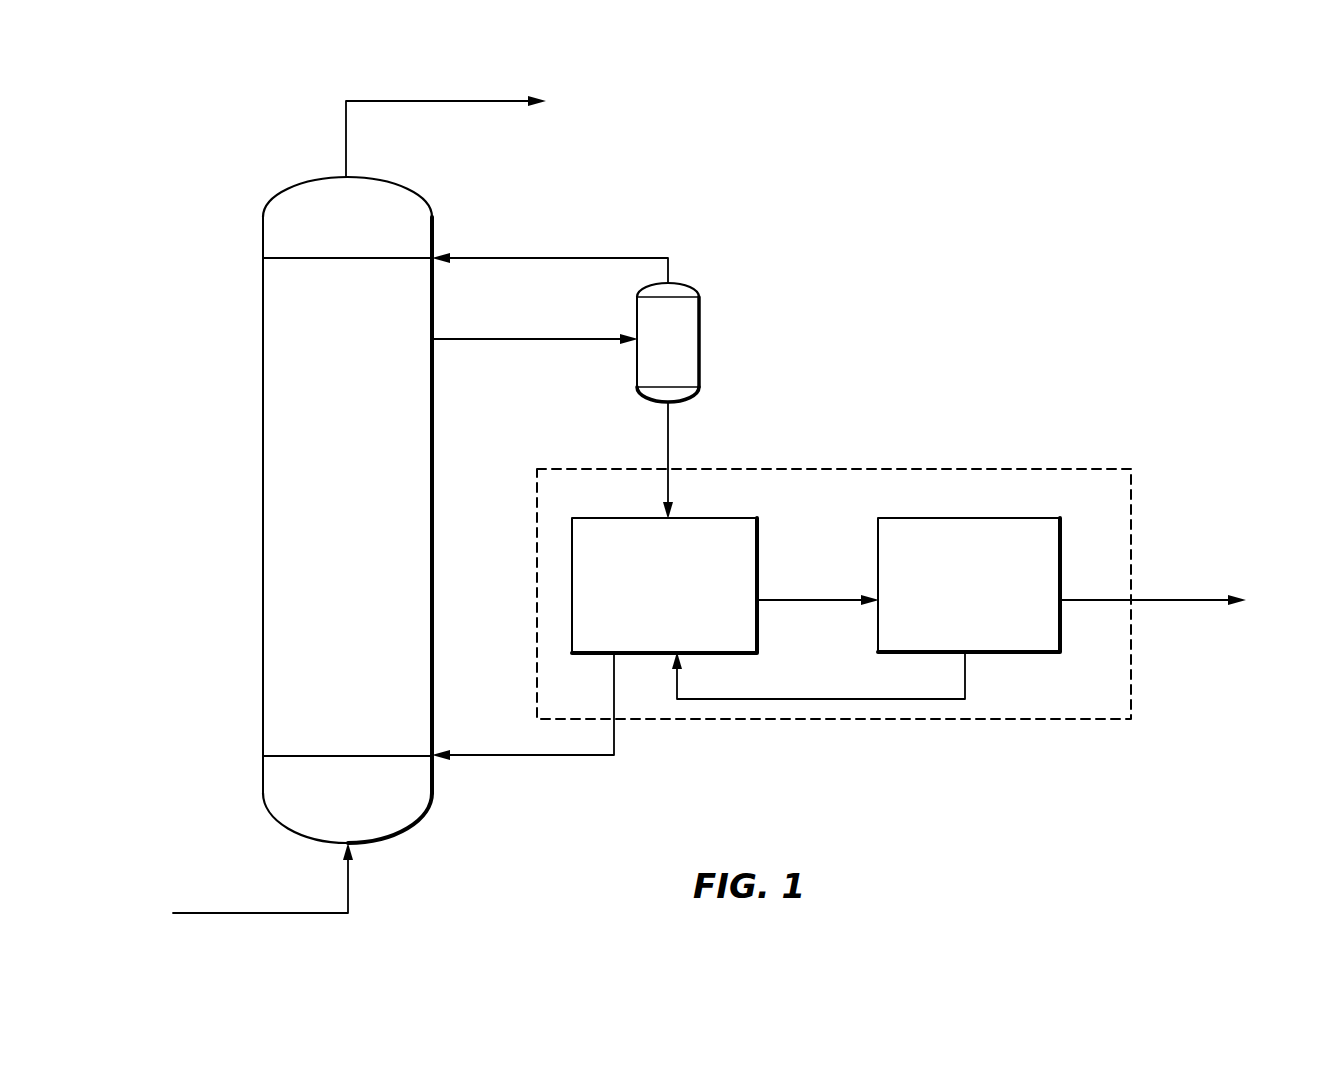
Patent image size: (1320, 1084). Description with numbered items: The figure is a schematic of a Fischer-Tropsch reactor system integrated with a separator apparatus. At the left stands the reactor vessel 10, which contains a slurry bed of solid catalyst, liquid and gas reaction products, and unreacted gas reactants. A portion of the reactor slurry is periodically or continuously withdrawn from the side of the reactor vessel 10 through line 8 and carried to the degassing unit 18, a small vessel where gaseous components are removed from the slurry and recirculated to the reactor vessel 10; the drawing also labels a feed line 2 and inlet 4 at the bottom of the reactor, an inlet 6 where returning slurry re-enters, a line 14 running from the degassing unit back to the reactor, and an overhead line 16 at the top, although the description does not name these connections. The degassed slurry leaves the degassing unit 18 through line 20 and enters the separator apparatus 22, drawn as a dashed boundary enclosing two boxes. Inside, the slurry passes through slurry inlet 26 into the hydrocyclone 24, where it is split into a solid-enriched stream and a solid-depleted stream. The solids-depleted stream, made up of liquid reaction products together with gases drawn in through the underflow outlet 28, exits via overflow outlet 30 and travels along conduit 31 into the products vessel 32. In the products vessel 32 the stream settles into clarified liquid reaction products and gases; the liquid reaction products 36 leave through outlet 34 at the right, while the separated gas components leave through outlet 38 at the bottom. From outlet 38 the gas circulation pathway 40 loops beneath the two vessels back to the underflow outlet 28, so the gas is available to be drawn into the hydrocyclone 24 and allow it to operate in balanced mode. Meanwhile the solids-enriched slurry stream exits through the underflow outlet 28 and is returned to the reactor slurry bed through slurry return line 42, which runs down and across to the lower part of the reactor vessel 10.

The feed line 2 is at (232, 912).
The column inlet 4 is at (357, 845).
The recycle inlet 6 is at (434, 748).
The line 8 is at (434, 341).
The reactor vessel 10 is at (361, 522).
The return line 14 is at (470, 258).
The overhead line 16 is at (346, 141).
The degassing unit 18 is at (683, 353).
The line 20 is at (667, 420).
The separator apparatus 22 is at (1052, 469).
The hydrocyclone 24 is at (679, 595).
The slurry inlet 26 is at (662, 517).
The underflow outlet 28 is at (672, 655).
The overflow outlet 30 is at (759, 603).
The conduit 31 is at (795, 599).
The products vessel 32 is at (982, 595).
The outlet 34 is at (1062, 603).
The liquid reaction products 36 is at (1281, 614).
The outlet 38 is at (966, 655).
The gas circulation pathway 40 is at (833, 700).
The slurry return line 42 is at (600, 757).